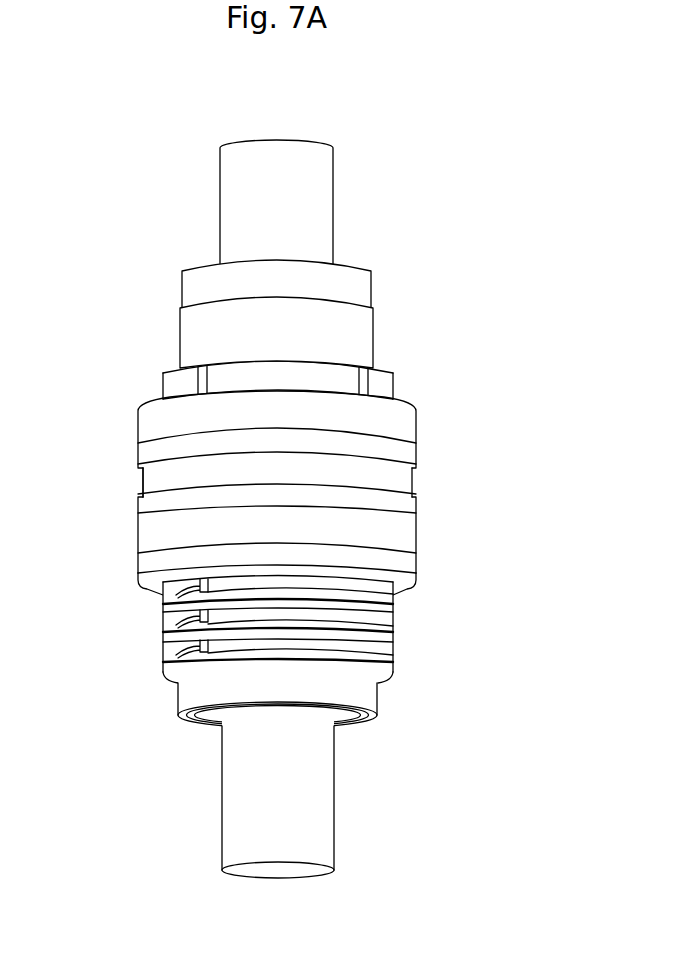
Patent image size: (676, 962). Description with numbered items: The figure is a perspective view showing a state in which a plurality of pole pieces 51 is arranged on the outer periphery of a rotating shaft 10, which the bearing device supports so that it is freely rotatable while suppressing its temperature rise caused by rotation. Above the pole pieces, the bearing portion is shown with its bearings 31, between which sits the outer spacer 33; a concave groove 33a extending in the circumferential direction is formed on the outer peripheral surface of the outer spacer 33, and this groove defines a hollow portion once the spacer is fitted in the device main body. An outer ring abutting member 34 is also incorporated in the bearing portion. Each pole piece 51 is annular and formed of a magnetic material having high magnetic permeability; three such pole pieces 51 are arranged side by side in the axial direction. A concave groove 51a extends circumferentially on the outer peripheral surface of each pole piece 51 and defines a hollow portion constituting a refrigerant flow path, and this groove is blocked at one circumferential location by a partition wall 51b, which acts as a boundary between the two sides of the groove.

The rotating shaft 10 is at (335, 212).
The bearing 31 is at (410, 425).
The outer spacer 33 is at (290, 492).
The concave groove 33a is at (153, 480).
The outer ring abutting member 34 is at (143, 568).
The pole piece 51 is at (308, 651).
The concave groove 51a is at (395, 594).
The partition wall 51b is at (168, 593).